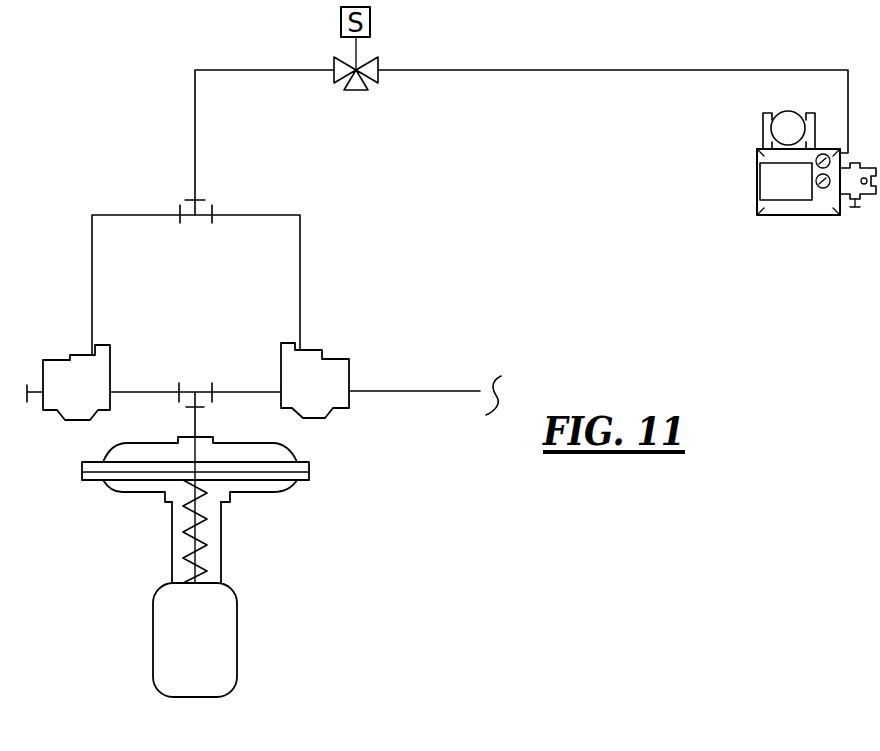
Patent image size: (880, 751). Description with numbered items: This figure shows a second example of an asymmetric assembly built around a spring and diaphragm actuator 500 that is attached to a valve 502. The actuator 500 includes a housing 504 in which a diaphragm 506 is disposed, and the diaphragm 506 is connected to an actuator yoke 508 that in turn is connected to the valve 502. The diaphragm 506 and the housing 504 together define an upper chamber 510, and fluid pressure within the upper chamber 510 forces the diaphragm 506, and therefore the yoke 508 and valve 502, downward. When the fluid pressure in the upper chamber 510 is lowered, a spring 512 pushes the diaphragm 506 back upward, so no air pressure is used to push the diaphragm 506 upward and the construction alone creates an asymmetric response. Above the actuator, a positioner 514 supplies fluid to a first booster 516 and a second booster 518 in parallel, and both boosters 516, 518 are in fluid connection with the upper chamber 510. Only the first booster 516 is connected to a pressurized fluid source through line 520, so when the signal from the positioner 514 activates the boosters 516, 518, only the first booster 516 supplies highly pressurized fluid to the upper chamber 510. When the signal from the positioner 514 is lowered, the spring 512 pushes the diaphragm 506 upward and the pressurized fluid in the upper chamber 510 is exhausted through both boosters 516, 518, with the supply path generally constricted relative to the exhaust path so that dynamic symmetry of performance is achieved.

The spring and diaphragm actuator 500 is at (112, 495).
The valve 502 is at (152, 639).
The housing 504 is at (152, 496).
The diaphragm 506 is at (270, 470).
The actuator yoke 508 is at (208, 560).
The upper chamber 510 is at (122, 456).
The spring 512 is at (208, 540).
The positioner 514 is at (803, 215).
The first booster 516 is at (338, 355).
The second booster 518 is at (53, 358).
The line 520 is at (450, 391).